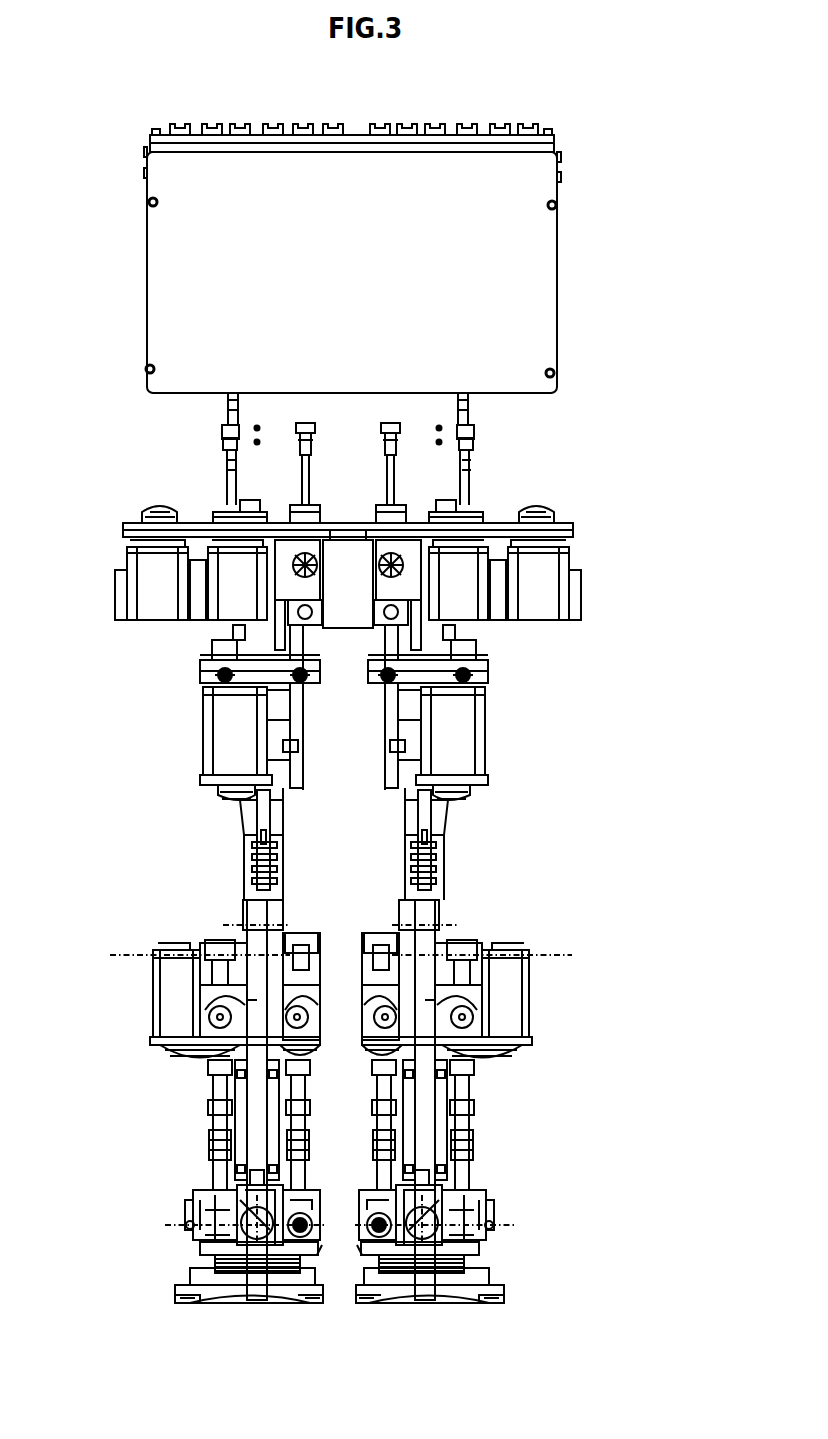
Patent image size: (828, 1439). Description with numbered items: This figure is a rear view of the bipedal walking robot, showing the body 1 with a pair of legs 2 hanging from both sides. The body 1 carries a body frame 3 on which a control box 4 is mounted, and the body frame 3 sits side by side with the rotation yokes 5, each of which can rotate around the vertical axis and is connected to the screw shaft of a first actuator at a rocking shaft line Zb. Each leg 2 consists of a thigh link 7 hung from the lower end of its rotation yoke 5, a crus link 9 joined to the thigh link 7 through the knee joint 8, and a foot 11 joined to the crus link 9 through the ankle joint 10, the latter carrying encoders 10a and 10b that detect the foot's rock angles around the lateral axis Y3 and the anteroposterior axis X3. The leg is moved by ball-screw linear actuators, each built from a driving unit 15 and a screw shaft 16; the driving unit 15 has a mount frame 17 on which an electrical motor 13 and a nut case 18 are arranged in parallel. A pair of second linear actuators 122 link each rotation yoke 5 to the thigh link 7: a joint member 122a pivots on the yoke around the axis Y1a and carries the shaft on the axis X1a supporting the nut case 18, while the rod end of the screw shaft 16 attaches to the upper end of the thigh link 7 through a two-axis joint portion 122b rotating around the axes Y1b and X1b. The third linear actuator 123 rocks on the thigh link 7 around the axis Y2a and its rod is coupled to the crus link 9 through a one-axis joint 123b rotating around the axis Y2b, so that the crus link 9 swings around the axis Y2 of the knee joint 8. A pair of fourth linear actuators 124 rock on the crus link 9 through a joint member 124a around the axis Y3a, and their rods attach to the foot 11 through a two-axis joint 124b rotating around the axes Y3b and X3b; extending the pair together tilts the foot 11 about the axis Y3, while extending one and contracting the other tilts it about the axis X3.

The body 1 is at (567, 355).
The leg 2 is at (235, 850).
The body frame 3 is at (322, 548).
The control box 4 is at (550, 253).
The rotation yoke 5 is at (235, 642).
The thigh link 7 is at (240, 860).
The knee joint 8 is at (225, 945).
The crus link 9 is at (257, 1088).
The ankle joint 10 is at (262, 1205).
The encoder 10a is at (195, 1215).
The encoder 10b is at (213, 1192).
The foot 11 is at (177, 1293).
The electrical motor 13 is at (232, 600).
The driving unit 15 is at (123, 540).
The screw shaft 16 is at (255, 835).
The mount frame 17 is at (150, 1045).
The nut case 18 is at (95, 1018).
The second linear (translatory) actuator 122 is at (215, 500).
The joint member 122a is at (288, 560).
The 2-axis joint portion 122b is at (212, 672).
The third linear (translatory) actuator 123 is at (200, 782).
The 1-axis joint 123b is at (415, 893).
The fourth linear (translatory) actuator 124 is at (375, 930).
The joint member 124a is at (412, 985).
The 2-axis joint 124b is at (375, 1145).
The X1a axis X1a is at (386, 548).
The X1b axis X1b is at (225, 690).
The X3 axis X3 is at (253, 1210).
The X3b axis X3b is at (345, 1257).
The Y1a axis Y1a is at (240, 505).
The Y1b axis Y1b is at (210, 680).
The Y2 axis Y2 is at (133, 955).
The Y2a axis Y2a is at (305, 733).
The Y2b axis Y2b is at (235, 925).
The Y3 axis Y3 is at (180, 1225).
The Y3a axis Y3a is at (240, 1062).
The Y3b axis Y3b is at (362, 1222).
The Zb axis Zb is at (383, 607).